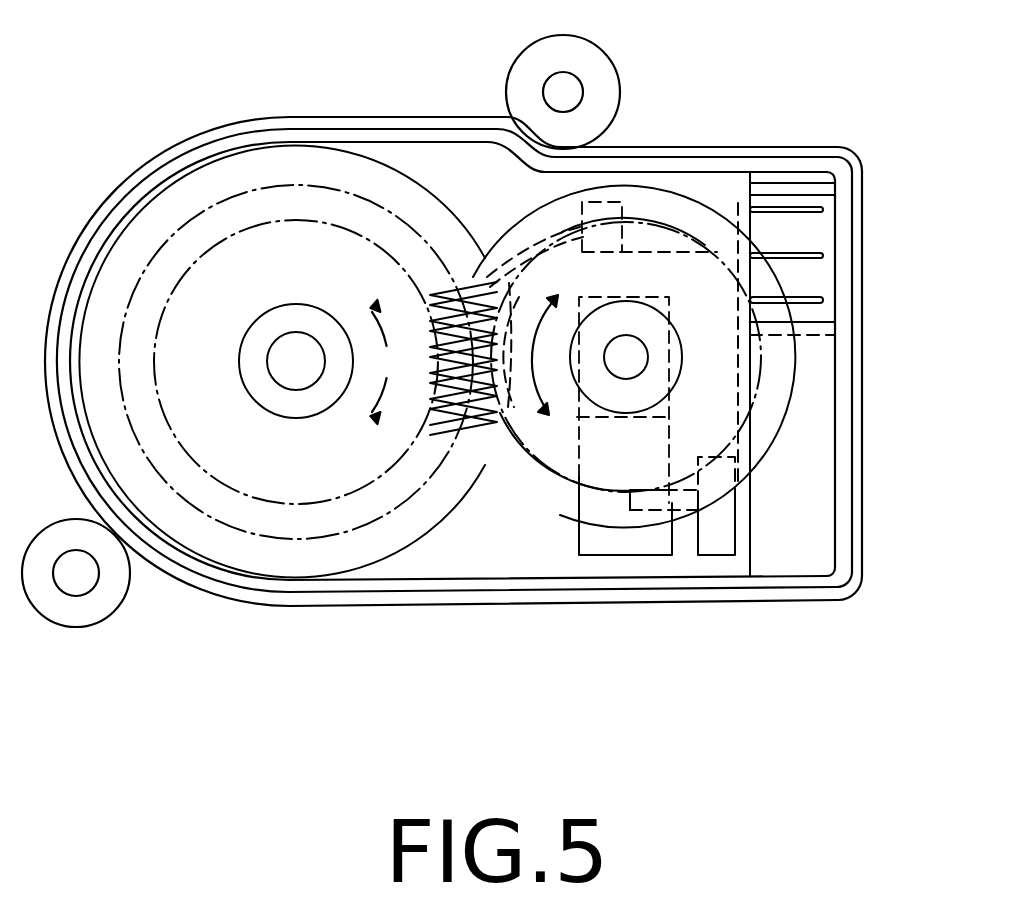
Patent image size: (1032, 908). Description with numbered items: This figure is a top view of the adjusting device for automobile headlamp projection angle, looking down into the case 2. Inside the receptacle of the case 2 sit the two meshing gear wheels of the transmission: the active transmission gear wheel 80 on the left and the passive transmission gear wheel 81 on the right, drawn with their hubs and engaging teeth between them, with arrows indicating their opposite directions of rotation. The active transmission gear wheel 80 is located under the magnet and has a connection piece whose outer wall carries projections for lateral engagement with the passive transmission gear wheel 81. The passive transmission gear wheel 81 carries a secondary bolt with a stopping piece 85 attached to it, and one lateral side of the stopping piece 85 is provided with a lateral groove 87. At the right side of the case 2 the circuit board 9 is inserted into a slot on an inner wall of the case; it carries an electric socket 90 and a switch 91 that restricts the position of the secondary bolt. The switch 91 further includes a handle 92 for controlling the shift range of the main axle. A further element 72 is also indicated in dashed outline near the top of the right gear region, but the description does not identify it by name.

The case 2 is at (402, 122).
The circuit board 9 is at (747, 518).
The engaging member 72 is at (607, 200).
The active transmission gear wheel 80 is at (432, 422).
The passive transmission gear wheel 81 is at (490, 445).
The stopping piece 85 is at (600, 542).
The lateral groove 87 is at (635, 445).
The electric socket 90 is at (725, 203).
The switch 91 is at (718, 537).
The handle 92 is at (655, 523).